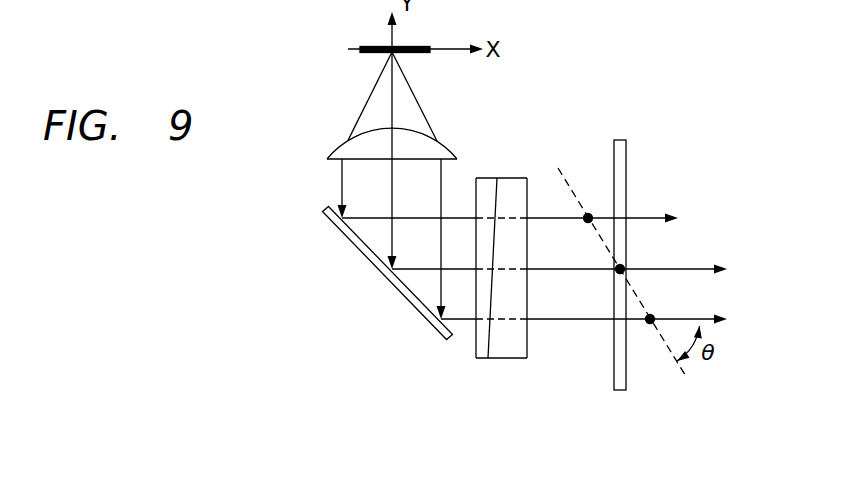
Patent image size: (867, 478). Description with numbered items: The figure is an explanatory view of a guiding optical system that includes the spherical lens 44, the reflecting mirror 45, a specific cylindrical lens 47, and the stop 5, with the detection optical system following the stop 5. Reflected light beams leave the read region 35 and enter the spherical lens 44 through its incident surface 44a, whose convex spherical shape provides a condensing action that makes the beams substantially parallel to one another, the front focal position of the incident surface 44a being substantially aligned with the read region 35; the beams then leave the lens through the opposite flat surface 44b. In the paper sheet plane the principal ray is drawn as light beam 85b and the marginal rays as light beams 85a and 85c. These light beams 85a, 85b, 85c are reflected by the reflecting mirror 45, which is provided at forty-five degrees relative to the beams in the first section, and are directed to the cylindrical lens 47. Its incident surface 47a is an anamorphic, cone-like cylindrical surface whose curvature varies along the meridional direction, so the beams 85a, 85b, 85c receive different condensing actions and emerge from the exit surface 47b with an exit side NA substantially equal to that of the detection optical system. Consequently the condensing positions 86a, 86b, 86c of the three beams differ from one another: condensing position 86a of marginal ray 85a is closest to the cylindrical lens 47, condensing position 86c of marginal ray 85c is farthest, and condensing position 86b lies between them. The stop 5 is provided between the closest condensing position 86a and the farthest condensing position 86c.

The stop 5 is at (617, 392).
The read region 35 is at (360, 50).
The spherical lens 44 is at (372, 145).
The incident surface 44a is at (348, 138).
The exit surface of spherical lens 44b is at (362, 160).
The reflecting mirror 45 is at (408, 302).
The cylindrical lens 47 is at (479, 264).
The cylindrical lens incident surface 47a is at (476, 333).
The exit surface 47b is at (528, 192).
The marginal ray 85a is at (557, 222).
The principal ray 85b is at (587, 273).
The marginal ray 85c is at (558, 323).
The condensing position 86a is at (593, 214).
The condensing position 86b is at (624, 265).
The condensing position 86c is at (654, 315).